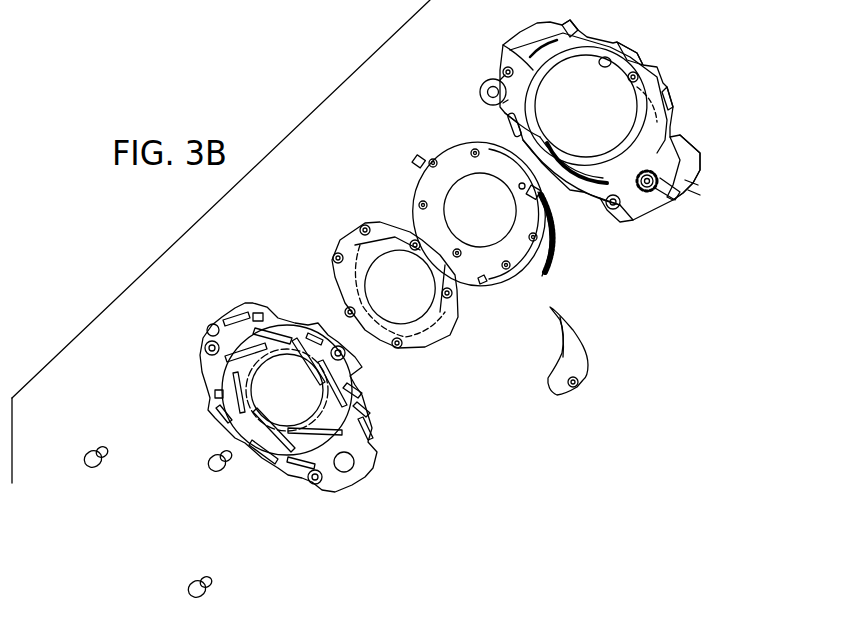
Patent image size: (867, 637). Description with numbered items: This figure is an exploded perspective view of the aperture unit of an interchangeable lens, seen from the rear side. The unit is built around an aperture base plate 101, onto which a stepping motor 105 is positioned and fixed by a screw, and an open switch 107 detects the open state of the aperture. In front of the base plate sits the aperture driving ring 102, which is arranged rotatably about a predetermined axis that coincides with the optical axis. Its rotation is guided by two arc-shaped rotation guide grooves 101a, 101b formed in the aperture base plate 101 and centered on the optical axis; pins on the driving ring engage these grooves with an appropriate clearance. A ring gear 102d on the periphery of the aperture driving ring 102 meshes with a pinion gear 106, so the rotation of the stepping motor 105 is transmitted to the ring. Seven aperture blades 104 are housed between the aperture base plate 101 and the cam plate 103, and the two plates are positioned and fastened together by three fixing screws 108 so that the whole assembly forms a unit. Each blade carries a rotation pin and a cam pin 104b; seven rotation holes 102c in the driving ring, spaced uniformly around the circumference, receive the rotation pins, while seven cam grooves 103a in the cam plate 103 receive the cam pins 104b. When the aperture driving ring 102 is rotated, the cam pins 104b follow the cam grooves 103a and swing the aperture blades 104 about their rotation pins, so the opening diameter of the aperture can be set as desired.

The aperture base plate 101 is at (503, 50).
The rotation guide groove 101a is at (637, 155).
The rotation guide groove 101b is at (610, 62).
The aperture driving ring 102 is at (437, 148).
The rotation hole 102c is at (505, 268).
The ring gear 102d is at (553, 260).
The cam plate 103 is at (240, 303).
The cam groove 103a is at (322, 435).
The aperture blade 104 is at (592, 340).
The cam pin 104b is at (577, 390).
The stepping motor 105 is at (682, 140).
The pinion gear 106 is at (645, 200).
The open switch 107 is at (221, 241).
The fixing screw 108 is at (215, 467).